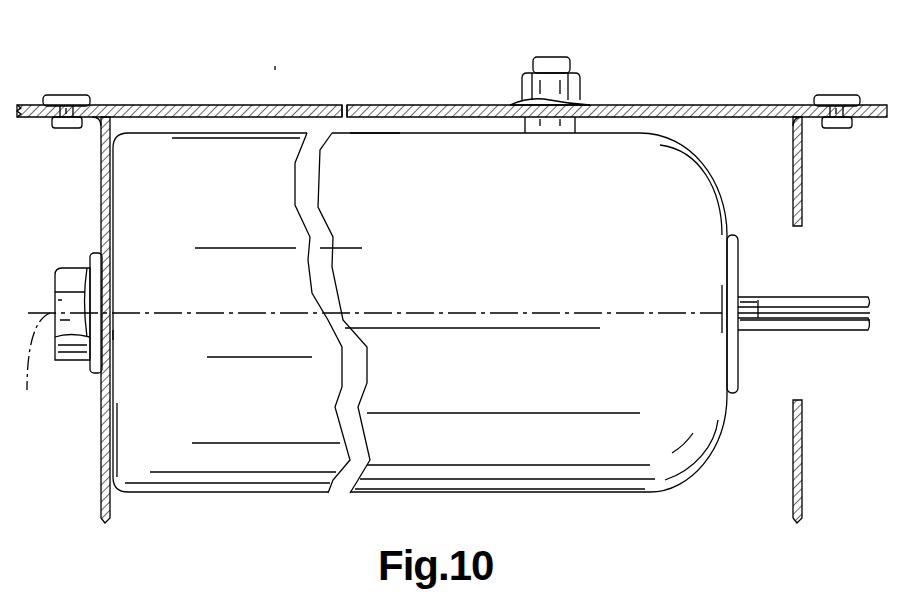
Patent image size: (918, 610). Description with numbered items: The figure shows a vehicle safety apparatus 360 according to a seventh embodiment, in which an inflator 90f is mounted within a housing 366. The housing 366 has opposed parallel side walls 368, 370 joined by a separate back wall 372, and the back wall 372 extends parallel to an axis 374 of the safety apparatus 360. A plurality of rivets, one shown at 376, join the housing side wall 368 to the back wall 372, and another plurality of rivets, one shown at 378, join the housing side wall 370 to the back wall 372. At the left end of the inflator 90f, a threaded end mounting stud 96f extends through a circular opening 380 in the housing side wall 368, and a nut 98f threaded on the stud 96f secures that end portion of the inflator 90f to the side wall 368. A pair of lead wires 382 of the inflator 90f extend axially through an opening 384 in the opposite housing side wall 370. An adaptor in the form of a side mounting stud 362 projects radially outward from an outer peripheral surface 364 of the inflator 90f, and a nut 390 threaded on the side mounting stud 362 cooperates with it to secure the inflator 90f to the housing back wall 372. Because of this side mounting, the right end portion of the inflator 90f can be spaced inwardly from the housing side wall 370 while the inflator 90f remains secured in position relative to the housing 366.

The vehicle safety apparatus 360 is at (275, 72).
The side mounting stud 362 is at (600, 130).
The outer peripheral surface 364 is at (405, 132).
The housing 366 is at (143, 106).
The housing side wall 368 is at (102, 150).
The housing side wall 370 is at (803, 165).
The back wall 372 is at (368, 104).
The axis 374 is at (31, 363).
The rivet 376 is at (72, 95).
The rivet 378 is at (836, 95).
The circular opening 380 is at (113, 330).
The lead wires 382 is at (800, 330).
The opening 384 is at (798, 233).
The nut 390 is at (582, 96).
The inflator 90f is at (496, 264).
The threaded end mounting stud 96f is at (98, 252).
The nut 98f is at (55, 283).